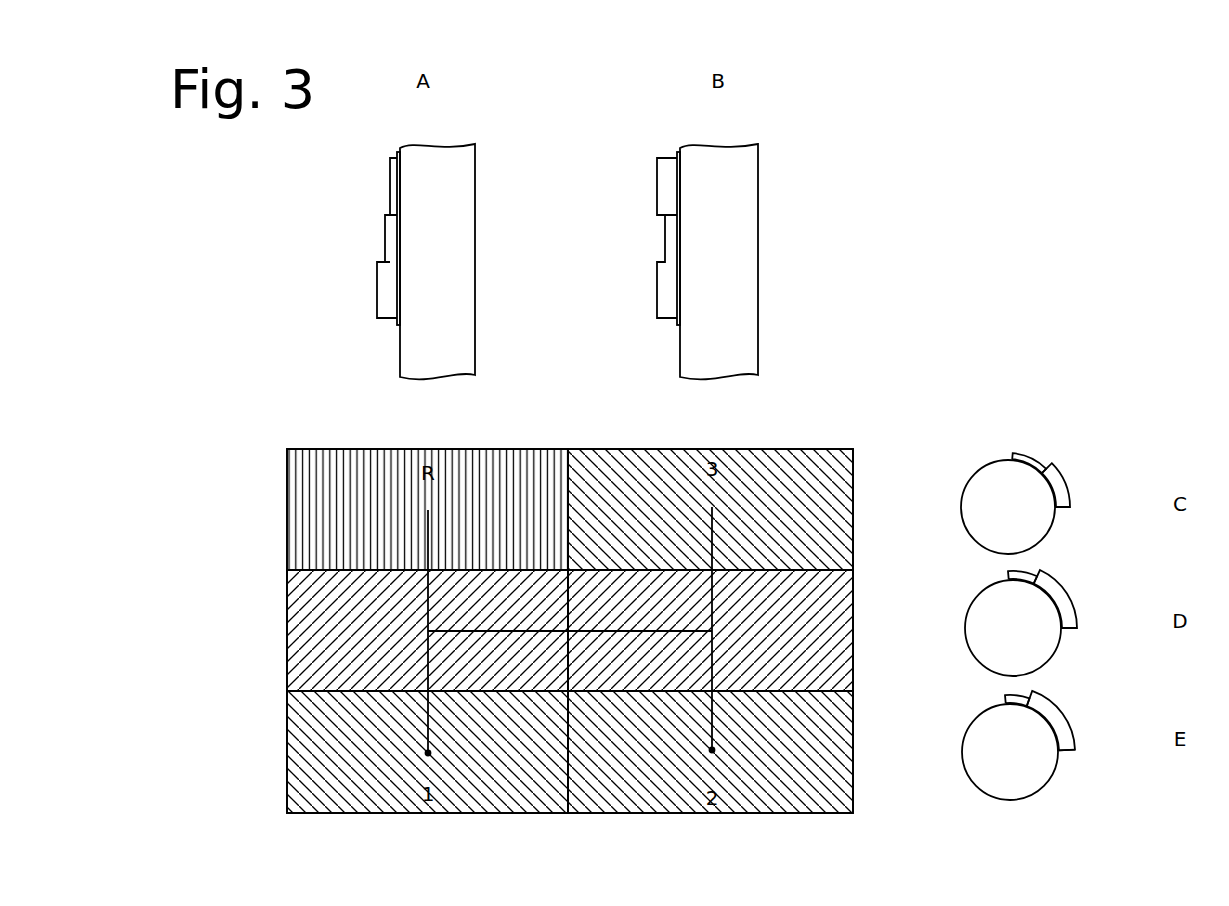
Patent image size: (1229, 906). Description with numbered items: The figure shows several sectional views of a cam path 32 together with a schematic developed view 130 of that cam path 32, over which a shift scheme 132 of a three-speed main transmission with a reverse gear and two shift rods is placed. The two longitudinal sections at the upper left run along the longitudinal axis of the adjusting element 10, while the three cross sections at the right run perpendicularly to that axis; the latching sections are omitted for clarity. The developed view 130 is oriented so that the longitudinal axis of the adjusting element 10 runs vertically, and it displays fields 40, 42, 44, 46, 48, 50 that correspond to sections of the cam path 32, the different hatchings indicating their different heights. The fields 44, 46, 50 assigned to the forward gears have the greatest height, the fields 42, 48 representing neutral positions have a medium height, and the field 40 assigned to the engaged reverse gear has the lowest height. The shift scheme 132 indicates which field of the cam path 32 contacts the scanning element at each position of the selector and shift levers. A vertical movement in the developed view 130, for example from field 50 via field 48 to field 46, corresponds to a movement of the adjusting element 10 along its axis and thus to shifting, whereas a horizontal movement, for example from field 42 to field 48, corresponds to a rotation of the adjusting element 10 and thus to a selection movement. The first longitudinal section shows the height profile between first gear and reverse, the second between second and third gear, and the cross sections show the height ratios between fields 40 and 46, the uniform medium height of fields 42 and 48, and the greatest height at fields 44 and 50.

The adjusting element 10 is at (462, 143).
The cam path 32 is at (392, 323).
The field 40 is at (390, 188).
The field 42 is at (385, 243).
The field 44 is at (377, 313).
The field 46 is at (657, 188).
The field 48 is at (665, 243).
The field 50 is at (657, 313).
The developed view 130 is at (797, 408).
The shift scheme 132 is at (712, 720).